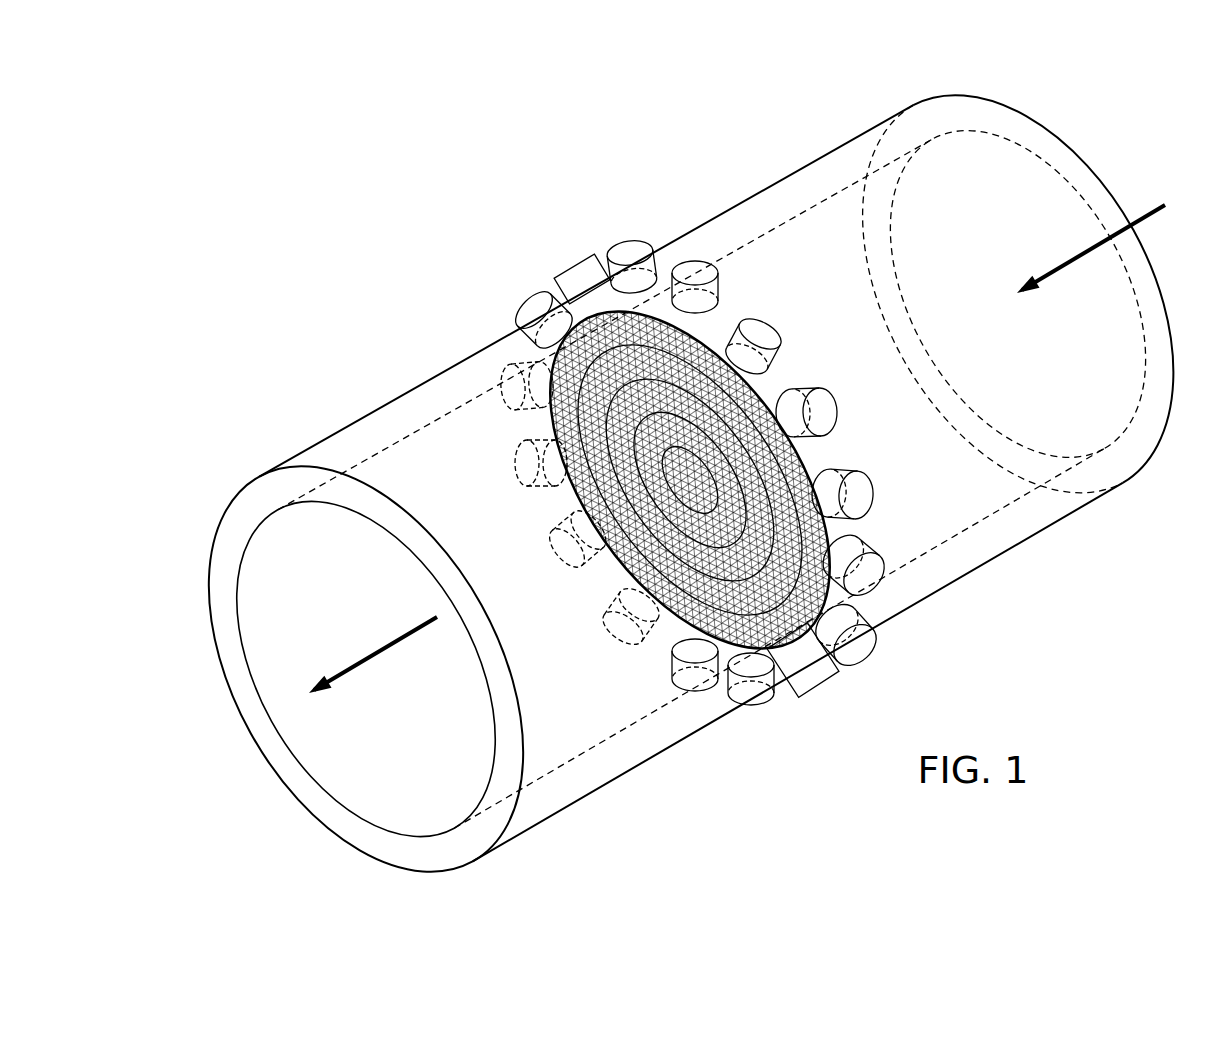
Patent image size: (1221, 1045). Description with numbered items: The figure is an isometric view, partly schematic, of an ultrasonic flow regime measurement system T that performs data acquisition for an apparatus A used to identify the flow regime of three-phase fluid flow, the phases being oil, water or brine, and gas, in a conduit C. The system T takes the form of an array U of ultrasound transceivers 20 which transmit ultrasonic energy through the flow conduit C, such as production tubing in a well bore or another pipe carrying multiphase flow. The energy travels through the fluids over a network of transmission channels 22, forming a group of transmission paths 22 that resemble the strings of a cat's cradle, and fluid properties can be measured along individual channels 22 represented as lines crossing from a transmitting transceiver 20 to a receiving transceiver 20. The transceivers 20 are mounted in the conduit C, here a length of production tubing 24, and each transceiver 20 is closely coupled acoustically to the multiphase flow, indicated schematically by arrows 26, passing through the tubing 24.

The ultrasound transceivers 20 is at (567, 268).
The transmission channels 22 is at (584, 498).
The production tubing 24 is at (560, 806).
The arrows 26 is at (362, 658).
The ultrasonic flow regime measurement system T is at (366, 389).
The array of ultrasound transceivers U is at (622, 238).
The flow conduit C is at (1022, 513).
The apparatus A is at (677, 762).